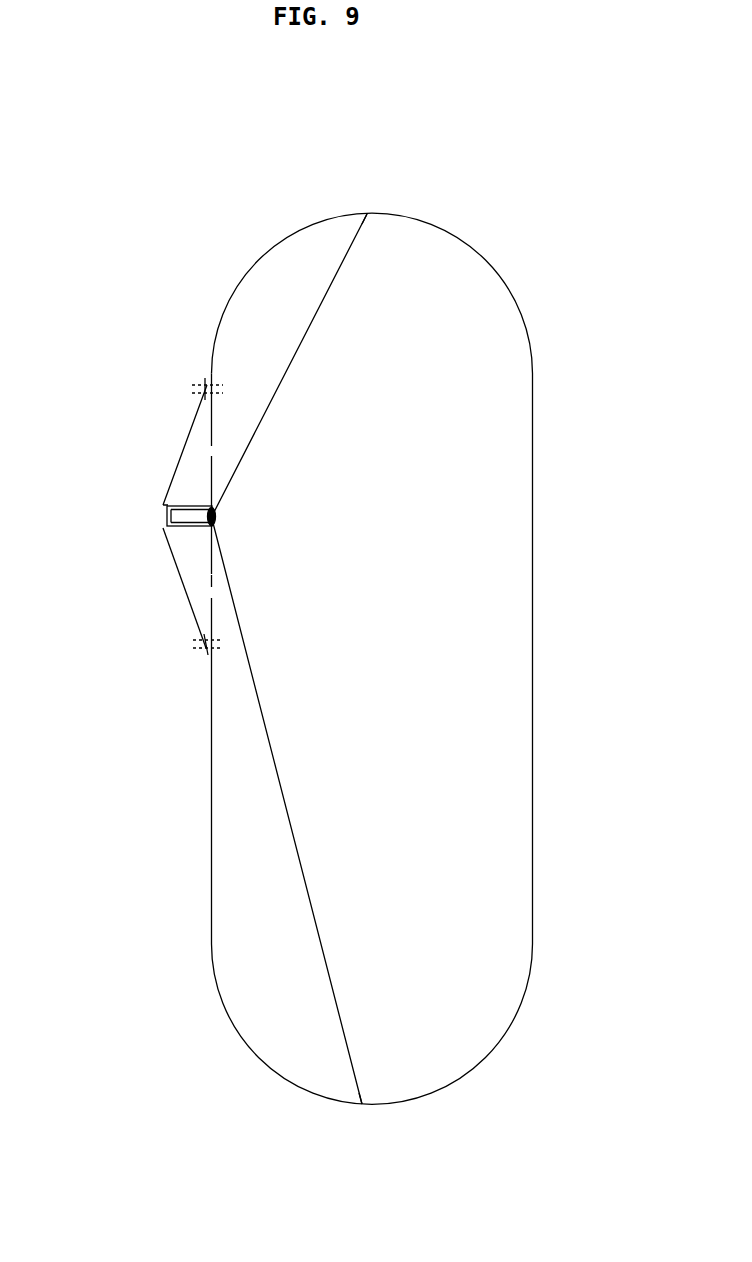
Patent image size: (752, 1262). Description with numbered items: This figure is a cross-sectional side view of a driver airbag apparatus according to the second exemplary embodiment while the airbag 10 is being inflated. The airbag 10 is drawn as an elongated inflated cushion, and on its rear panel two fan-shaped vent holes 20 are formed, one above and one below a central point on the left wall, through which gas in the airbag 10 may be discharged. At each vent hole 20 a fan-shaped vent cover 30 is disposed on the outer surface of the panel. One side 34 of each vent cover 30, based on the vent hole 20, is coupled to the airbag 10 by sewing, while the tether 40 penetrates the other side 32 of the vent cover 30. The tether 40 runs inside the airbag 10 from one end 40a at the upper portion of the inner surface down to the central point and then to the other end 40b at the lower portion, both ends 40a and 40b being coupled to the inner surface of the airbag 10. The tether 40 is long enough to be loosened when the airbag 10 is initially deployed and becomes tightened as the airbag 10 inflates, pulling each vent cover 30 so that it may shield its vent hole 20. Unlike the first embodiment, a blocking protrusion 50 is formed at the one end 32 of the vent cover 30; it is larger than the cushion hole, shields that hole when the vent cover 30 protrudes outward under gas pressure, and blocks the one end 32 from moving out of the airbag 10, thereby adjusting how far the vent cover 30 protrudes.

The airbag 10 is at (503, 232).
The vent hole 20 is at (212, 470).
The vent cover 30 is at (154, 466).
The other side of vent cover 32 is at (167, 510).
The one side of vent cover 34 is at (183, 443).
The tether 40 is at (308, 279).
The end of tether 40a is at (367, 215).
The end of tether 40b is at (362, 1103).
The blocking protrusion 50 is at (216, 516).